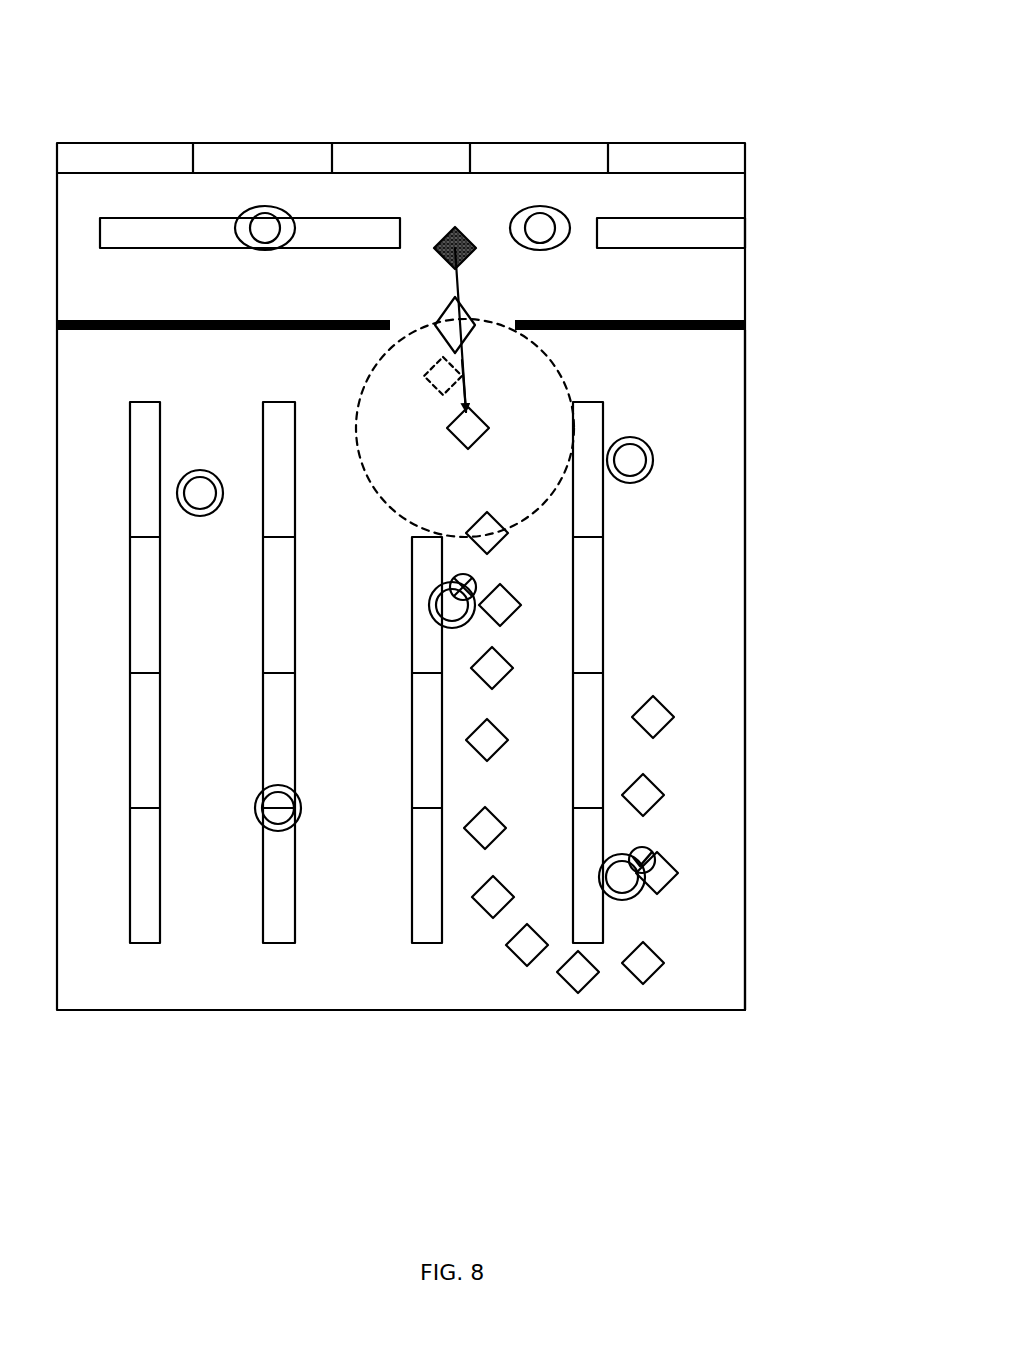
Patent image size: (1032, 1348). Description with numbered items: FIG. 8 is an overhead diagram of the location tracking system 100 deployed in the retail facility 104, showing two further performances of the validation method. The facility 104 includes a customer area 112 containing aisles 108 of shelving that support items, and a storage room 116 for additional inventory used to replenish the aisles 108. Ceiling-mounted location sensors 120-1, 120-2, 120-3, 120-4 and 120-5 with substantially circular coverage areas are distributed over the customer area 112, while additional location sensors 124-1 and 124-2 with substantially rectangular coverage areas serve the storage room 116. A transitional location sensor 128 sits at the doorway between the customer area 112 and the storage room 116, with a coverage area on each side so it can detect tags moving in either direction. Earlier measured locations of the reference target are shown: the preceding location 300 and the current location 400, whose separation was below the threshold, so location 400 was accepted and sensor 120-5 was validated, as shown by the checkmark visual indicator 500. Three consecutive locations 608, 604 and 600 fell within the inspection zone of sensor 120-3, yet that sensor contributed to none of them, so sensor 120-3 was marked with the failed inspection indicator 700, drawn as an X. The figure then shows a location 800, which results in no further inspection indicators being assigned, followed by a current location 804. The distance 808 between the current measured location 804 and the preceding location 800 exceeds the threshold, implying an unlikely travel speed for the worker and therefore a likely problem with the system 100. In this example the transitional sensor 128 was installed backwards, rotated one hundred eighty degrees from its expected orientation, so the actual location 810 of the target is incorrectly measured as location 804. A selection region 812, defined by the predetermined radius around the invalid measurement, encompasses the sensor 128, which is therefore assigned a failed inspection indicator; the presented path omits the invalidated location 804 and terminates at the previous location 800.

The location tracking system 100 is at (607, 100).
The retail facility 104 is at (748, 453).
The aisles 108 is at (145, 943).
The customer area 112 is at (723, 577).
The storage room 116 is at (728, 302).
The location sensor 120-1 is at (203, 470).
The location sensor 120-2 is at (630, 437).
The location sensor 120-3 is at (429, 602).
The location sensor 120-4 is at (277, 831).
The location sensor 120-5 is at (648, 885).
The location sensor 124-1 is at (240, 230).
The location sensor 124-2 is at (543, 250).
The transitional location sensor 128 is at (440, 315).
The location 300 is at (674, 717).
The current location 400 is at (664, 795).
The visual indicator 500 is at (660, 858).
The location 600 is at (492, 512).
The preceding location 604 is at (521, 605).
The preceding location 608 is at (505, 658).
The failed inspection indicator 700 is at (450, 582).
The location 800 is at (450, 432).
The current location 804 is at (455, 228).
The distance 808 is at (470, 396).
The actual location 810 is at (428, 387).
The selection region 812 is at (365, 378).